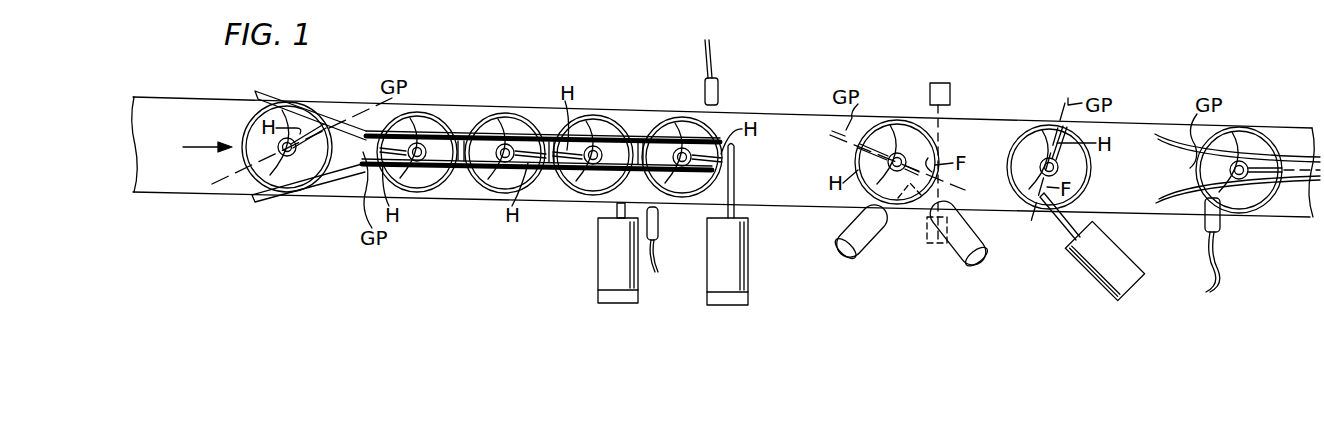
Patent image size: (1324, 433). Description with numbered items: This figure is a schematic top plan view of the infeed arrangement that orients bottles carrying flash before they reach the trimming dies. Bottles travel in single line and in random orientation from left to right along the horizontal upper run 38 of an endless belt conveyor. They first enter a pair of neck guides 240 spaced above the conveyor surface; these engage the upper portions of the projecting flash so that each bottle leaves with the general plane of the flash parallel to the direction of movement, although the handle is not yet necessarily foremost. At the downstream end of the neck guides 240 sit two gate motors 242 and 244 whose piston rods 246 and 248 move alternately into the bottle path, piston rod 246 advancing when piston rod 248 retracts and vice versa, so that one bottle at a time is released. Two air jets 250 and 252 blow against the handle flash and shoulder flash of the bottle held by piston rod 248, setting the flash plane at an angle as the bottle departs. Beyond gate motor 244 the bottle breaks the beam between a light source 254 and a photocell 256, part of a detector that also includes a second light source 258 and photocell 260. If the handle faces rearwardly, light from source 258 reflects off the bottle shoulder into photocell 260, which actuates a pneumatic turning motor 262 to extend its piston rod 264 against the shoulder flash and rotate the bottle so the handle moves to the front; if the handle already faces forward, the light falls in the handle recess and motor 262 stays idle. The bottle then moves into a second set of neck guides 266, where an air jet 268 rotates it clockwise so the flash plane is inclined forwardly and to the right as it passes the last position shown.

The horizontal upper run of endless belt conveyor 38 is at (812, 176).
The neck guides 240 is at (338, 118).
The gate motor 242 is at (605, 280).
The gate motor 244 is at (748, 290).
The piston rod 246 is at (616, 212).
The piston rod 248 is at (736, 190).
The air jet 250 is at (659, 226).
The air jet 252 is at (719, 92).
The light source 254 is at (934, 246).
The photocell 256 is at (951, 95).
The second light source 258 is at (977, 262).
The photocell 260 is at (841, 254).
The pneumatic turning motor 262 is at (1118, 296).
The rod 264 is at (1068, 236).
The second set of neck guides 266 is at (1168, 201).
The air jet 268 is at (1222, 226).